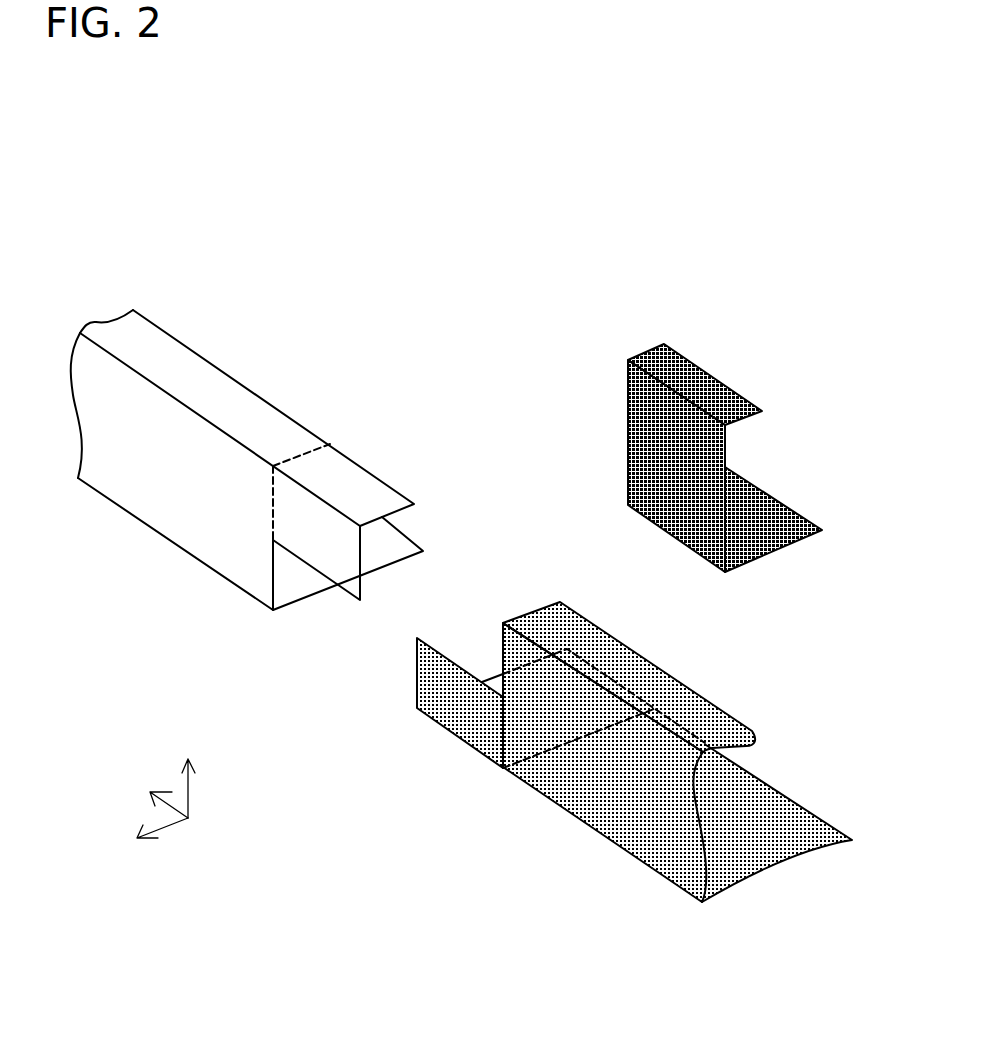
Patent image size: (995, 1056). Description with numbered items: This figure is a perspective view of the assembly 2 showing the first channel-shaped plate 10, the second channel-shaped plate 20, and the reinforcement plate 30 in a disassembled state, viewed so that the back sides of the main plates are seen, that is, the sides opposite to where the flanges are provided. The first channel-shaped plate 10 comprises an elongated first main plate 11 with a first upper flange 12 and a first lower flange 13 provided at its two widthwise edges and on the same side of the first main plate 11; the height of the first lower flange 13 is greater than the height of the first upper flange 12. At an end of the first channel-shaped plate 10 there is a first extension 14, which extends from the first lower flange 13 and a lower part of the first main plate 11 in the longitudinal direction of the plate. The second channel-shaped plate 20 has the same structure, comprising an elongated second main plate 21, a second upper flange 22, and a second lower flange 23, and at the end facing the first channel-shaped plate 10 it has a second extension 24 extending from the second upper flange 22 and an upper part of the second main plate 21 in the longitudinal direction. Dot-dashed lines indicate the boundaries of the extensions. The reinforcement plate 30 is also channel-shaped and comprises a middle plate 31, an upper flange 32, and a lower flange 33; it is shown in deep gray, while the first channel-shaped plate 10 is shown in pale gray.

The connection structure 2 is at (586, 180).
The first channel-shaped plate 10 is at (775, 690).
The first main plate 11 is at (622, 836).
The first upper flange 12 is at (664, 684).
The first lower flange 13 is at (793, 802).
The first extension 14 is at (500, 777).
The second channel-shaped plate 20 is at (239, 345).
The second main plate 21 is at (160, 527).
The second upper flange 22 is at (282, 418).
The second lower flange 23 is at (399, 550).
The second extension 24 is at (340, 438).
The reinforcement plate 30 is at (737, 355).
The middle plate 31 is at (628, 443).
The upper flange 32 is at (650, 353).
The lower flange 33 is at (790, 517).